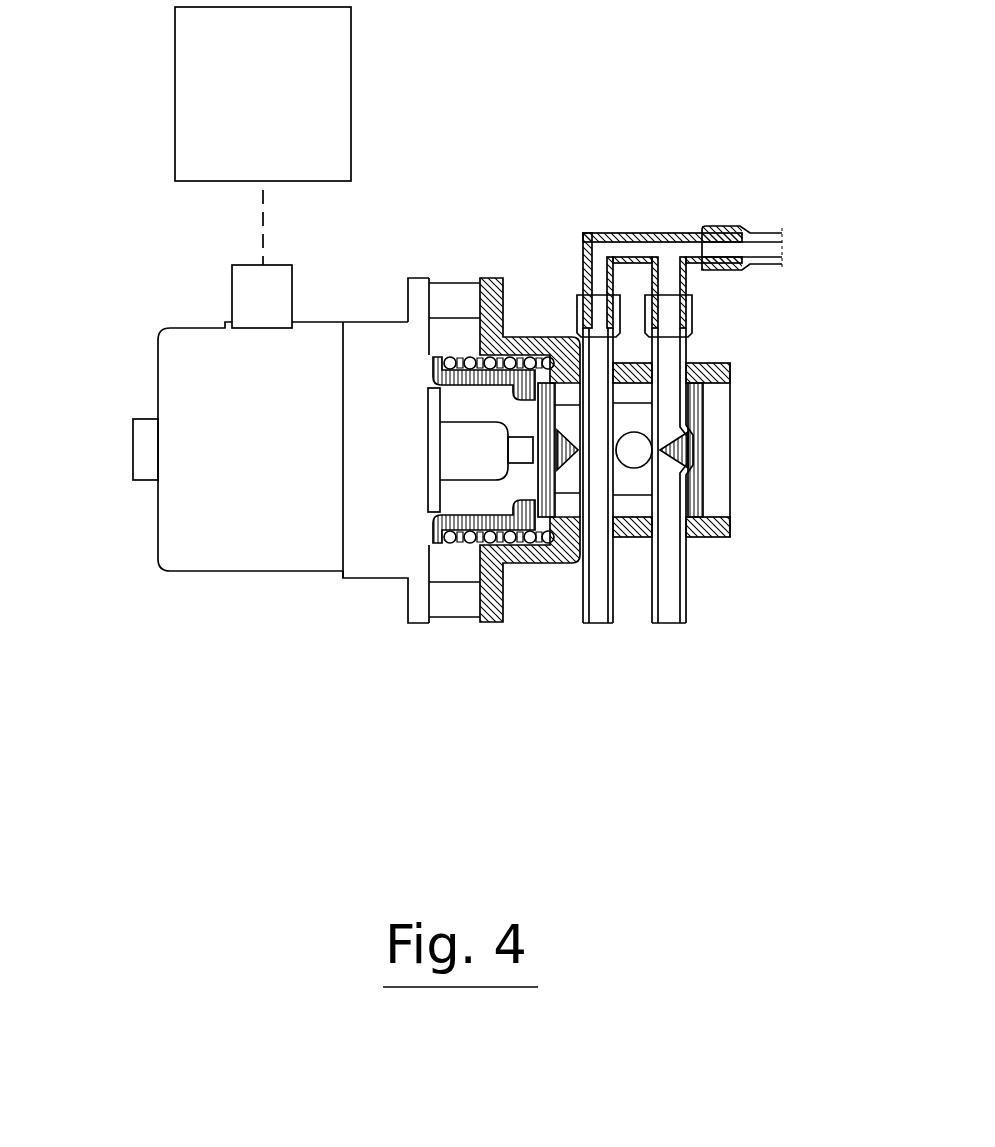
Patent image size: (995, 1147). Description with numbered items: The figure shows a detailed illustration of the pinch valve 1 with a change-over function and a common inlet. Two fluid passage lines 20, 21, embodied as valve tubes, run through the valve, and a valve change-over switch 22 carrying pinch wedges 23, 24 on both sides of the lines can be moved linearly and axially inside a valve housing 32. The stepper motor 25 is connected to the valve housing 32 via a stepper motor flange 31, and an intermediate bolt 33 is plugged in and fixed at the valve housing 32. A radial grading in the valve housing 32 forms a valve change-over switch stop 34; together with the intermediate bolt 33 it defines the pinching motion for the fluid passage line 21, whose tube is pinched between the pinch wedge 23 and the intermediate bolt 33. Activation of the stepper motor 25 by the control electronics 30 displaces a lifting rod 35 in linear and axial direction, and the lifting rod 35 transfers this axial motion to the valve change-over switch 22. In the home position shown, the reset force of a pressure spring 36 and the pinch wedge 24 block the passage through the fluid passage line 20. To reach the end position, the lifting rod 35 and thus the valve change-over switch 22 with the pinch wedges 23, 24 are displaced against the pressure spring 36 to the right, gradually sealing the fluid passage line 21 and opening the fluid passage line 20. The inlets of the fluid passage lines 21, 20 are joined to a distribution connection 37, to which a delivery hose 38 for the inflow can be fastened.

The pinch valve 1 is at (123, 311).
The fluid passage line 20 is at (686, 561).
The fluid passage line 21 is at (612, 606).
The valve change-over switch 22 is at (459, 545).
The pinch wedge 23 is at (563, 562).
The pinch wedge 24 is at (692, 448).
The stepper motor 25 is at (262, 550).
The control electronics 30 is at (277, 113).
The stepper motor flange 31 is at (375, 552).
The valve housing 32 is at (730, 373).
The intermediate bolt 33 is at (634, 450).
The valve change-over switch stop 34 is at (550, 338).
The lifting rod 35 is at (520, 450).
The pressure spring 36 is at (467, 357).
The distribution connection 37 is at (630, 233).
The delivery hose 38 is at (759, 226).